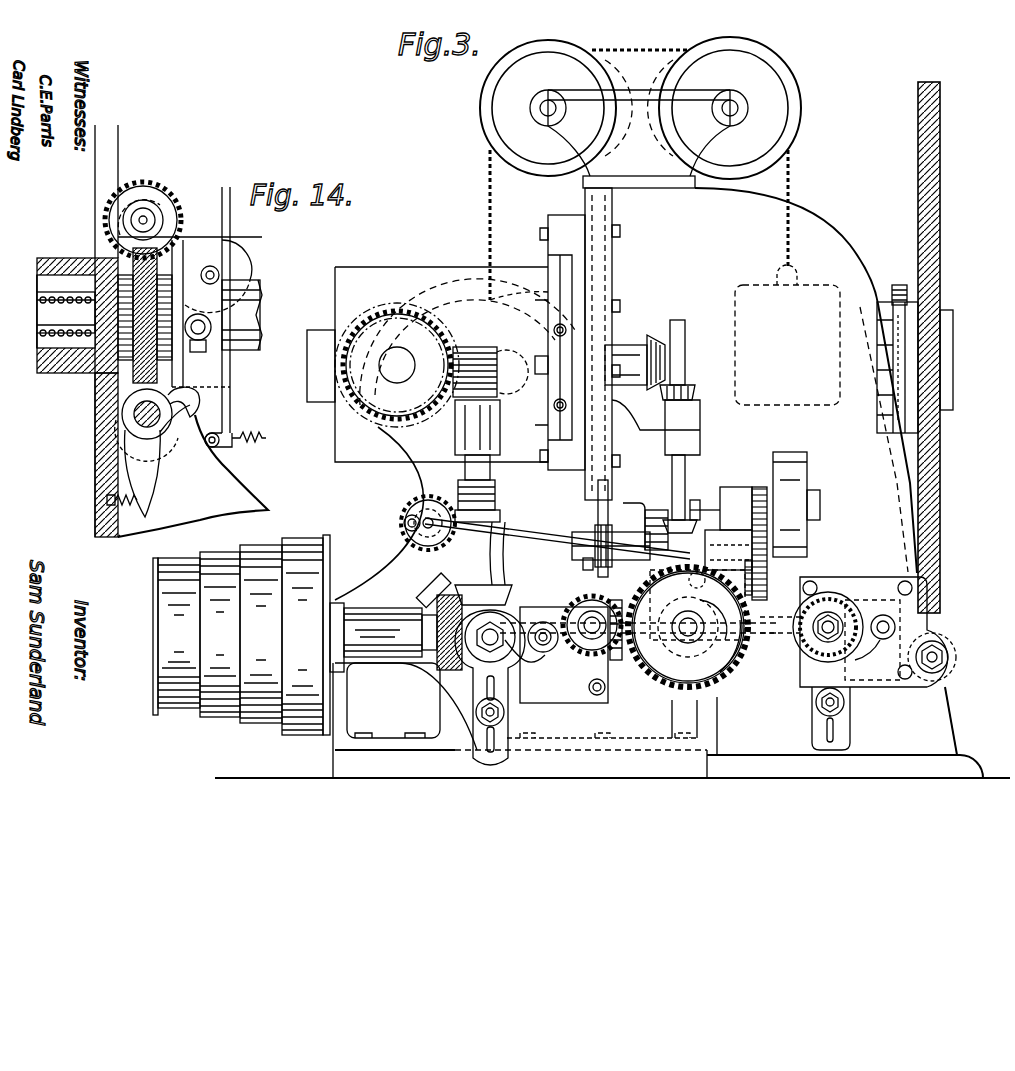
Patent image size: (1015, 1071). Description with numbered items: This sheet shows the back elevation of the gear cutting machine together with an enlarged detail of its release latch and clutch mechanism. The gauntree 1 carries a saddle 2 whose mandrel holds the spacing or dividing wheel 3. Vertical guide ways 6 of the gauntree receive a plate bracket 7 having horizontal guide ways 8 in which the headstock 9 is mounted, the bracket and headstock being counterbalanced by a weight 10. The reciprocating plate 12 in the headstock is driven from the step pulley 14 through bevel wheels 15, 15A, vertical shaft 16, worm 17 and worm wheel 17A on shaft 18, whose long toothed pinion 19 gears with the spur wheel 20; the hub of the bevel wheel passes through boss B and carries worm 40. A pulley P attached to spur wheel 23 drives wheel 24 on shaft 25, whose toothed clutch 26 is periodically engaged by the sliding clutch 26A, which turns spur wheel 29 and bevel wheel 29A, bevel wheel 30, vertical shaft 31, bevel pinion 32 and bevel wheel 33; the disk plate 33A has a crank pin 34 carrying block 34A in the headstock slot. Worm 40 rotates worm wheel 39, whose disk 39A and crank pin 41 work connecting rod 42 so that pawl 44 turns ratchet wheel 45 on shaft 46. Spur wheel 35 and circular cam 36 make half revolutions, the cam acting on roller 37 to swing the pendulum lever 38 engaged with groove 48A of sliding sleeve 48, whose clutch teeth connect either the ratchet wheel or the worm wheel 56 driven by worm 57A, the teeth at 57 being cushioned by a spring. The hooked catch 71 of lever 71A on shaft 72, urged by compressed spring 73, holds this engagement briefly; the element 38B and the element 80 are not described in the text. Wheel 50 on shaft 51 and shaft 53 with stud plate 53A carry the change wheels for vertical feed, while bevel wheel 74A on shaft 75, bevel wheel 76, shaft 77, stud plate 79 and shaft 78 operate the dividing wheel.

In FIG. 3, the gauntree 1 is at (612, 483).
In FIG. 14, the gauntree 1 is at (110, 170).
In FIG. 3, the saddle 2 is at (880, 302).
In FIG. 3, the spacing or dividing wheel 3 is at (937, 347).
In FIG. 3, the vertical guide ways 6 is at (600, 199).
In FIG. 3, the plate bracket 7 is at (524, 351).
In FIG. 3, the horizontal guide ways 8 is at (550, 353).
In FIG. 3, the headstock 9 is at (519, 291).
In FIG. 3, the weight 10 is at (787, 335).
In FIG. 3, the reciprocating plate 12 is at (307, 358).
In FIG. 3, the step pulley 14 is at (215, 565).
In FIG. 14, the step pulley 14 is at (238, 543).
In FIG. 3, the bevel wheel 15 is at (437, 610).
In FIG. 3, the bevel wheel 15A is at (437, 582).
In FIG. 3, the vertical shaft 16 is at (495, 486).
In FIG. 3, the worm 17 is at (475, 347).
In FIG. 3, the worm wheel 17A is at (441, 364).
In FIG. 3, the shaft 18 is at (397, 365).
In FIG. 3, the long toothed pinion 19 is at (397, 345).
In FIG. 3, the spur wheel 20 is at (467, 342).
In FIG. 3, the spur wheel 23 is at (752, 487).
In FIG. 3, the wheel 24 is at (767, 570).
In FIG. 3, the shaft 25 is at (768, 560).
In FIG. 3, the toothed clutch 26 is at (574, 572).
In FIG. 3, the sliding clutch 26A is at (597, 528).
In FIG. 3, the spur wheel 29 is at (648, 512).
In FIG. 3, the bevel wheel 29A is at (598, 510).
In FIG. 3, the bevel wheel 30 is at (700, 532).
In FIG. 3, the vertical shaft 31 is at (685, 468).
In FIG. 3, the bevel pinion 32 is at (690, 396).
In FIG. 3, the bevel wheel 33 is at (648, 351).
In FIG. 3, the disk plate 33A is at (612, 345).
In FIG. 3, the crank pin 34 is at (536, 372).
In FIG. 3, the block 34A is at (514, 359).
In FIG. 3, the spur wheel 35 is at (592, 596).
In FIG. 3, the circular cam 36 is at (688, 628).
In FIG. 14, the roller 37 is at (240, 262).
In FIG. 14, the pendulum lever 38 is at (193, 450).
In FIG. 14, the spring 38B is at (258, 432).
In FIG. 3, the worm wheel 39 is at (402, 518).
In FIG. 3, the disk 39A is at (410, 514).
In FIG. 3, the worm 40 is at (606, 598).
In FIG. 3, the crank pin 41 is at (405, 530).
In FIG. 3, the connecting rod 42 is at (557, 541).
In FIG. 3, the pawl 44 is at (697, 605).
In FIG. 3, the ratchet wheel 45 is at (688, 627).
In FIG. 3, the shaft 46 is at (735, 637).
In FIG. 14, the sliding sleeve 48 is at (262, 310).
In FIG. 14, the groove 48A is at (205, 352).
In FIG. 3, the wheel 50 is at (560, 620).
In FIG. 3, the shaft 51 is at (640, 655).
In FIG. 3, the shaft 53 is at (478, 660).
In FIG. 3, the stud plate 53A is at (521, 654).
In FIG. 14, the worm wheel 56 is at (125, 378).
In FIG. 14, the clutch teeth 57 is at (160, 285).
In FIG. 14, the worm 57A is at (112, 218).
In FIG. 14, the hooked catch 71 is at (165, 430).
In FIG. 14, the lever 71A is at (132, 460).
In FIG. 14, the shaft 72 is at (160, 462).
In FIG. 14, the compressed spring 73 is at (105, 500).
In FIG. 3, the bevel wheel 74A is at (616, 660).
In FIG. 3, the shaft 75 is at (780, 614).
In FIG. 3, the bevel wheel 76 is at (868, 615).
In FIG. 3, the shaft 77 is at (805, 640).
In FIG. 3, the shaft 78 is at (948, 657).
In FIG. 3, the stud plate 79 is at (848, 690).
In FIG. 3, the lobe 80 is at (950, 640).
In FIG. 3, the boss B is at (420, 513).
In FIG. 3, the pulley P is at (808, 460).